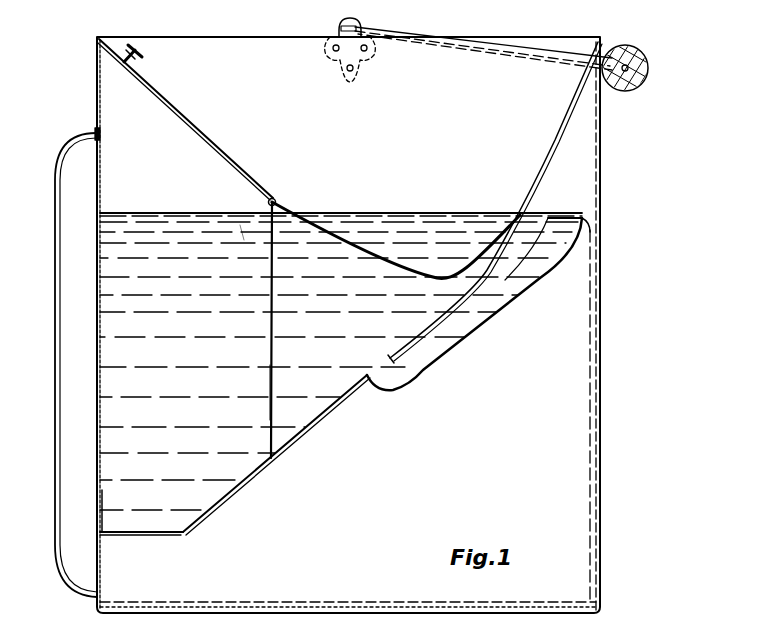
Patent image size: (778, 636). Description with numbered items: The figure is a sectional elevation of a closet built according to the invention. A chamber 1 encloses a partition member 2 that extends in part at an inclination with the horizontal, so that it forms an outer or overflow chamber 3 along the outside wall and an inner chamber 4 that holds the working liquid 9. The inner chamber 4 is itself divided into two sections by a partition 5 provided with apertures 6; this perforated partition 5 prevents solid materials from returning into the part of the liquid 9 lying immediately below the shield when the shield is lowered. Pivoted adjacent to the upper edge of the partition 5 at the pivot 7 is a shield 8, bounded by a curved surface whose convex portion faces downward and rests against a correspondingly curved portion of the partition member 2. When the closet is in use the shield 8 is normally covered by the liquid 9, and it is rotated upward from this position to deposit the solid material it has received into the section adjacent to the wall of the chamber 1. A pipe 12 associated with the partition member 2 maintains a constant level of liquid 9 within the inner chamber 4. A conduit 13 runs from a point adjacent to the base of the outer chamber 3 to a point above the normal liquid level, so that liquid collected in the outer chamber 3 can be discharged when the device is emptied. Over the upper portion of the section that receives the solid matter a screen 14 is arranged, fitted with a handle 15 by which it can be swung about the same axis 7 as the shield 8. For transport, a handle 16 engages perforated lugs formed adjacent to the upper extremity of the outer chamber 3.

The chamber 1 is at (228, 614).
The partition member 2 is at (312, 412).
The outer or overflow chamber 3 is at (578, 383).
The inner chamber 4 is at (292, 242).
The partition 5 is at (276, 350).
The apertures 6 is at (272, 410).
The pivot 7 is at (278, 200).
The shield 8 is at (348, 238).
The liquid 9 is at (482, 225).
The pipe 12 is at (472, 335).
The conduit 13 is at (80, 152).
The screen 14 is at (187, 117).
The handle 15 is at (144, 57).
The handle 16 is at (627, 88).